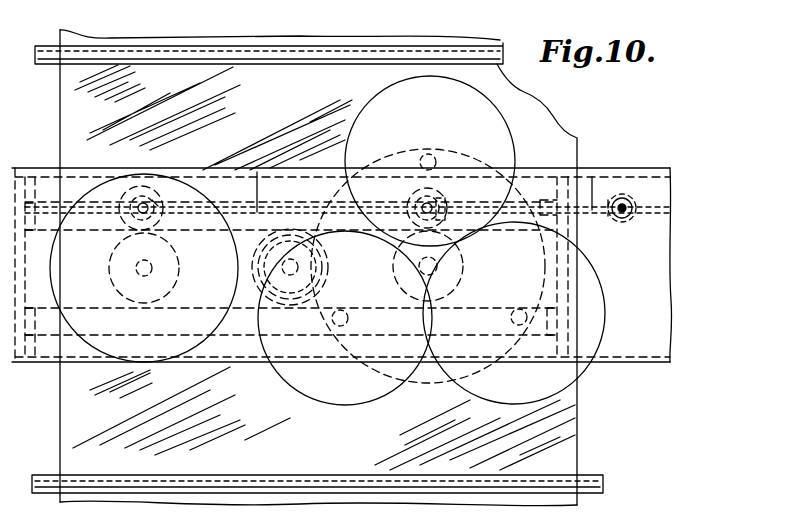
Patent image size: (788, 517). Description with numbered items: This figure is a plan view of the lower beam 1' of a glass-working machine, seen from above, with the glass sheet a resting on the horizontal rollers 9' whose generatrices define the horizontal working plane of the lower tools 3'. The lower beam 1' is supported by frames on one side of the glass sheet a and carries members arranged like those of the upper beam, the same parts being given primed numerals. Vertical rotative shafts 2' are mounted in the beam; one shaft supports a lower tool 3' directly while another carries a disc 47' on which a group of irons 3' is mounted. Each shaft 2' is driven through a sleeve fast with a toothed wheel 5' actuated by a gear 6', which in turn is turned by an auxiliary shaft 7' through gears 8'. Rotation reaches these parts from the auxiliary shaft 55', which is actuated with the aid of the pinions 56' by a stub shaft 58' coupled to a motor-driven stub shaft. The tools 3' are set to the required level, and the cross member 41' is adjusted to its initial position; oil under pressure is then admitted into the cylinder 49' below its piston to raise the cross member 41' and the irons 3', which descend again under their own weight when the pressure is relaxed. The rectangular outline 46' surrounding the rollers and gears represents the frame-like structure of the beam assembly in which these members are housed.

The glass sheet a is at (80, 115).
The lower beam 1' is at (657, 247).
The vertical rotative shaft 2' is at (157, 268).
The lower tool 3' is at (314, 267).
The toothed wheel 5' is at (305, 240).
The gear 6' is at (310, 161).
The auxiliary shaft 7' is at (322, 176).
The gears 8' is at (184, 174).
The horizontal rollers 9' is at (320, 268).
The cross member 41' is at (391, 284).
The frame 46' is at (341, 251).
The disc 47' is at (345, 331).
The cylinder 49' is at (260, 267).
The auxiliary shaft 55' is at (431, 166).
The pinions 56' is at (637, 200).
The stub shaft 58' is at (630, 232).